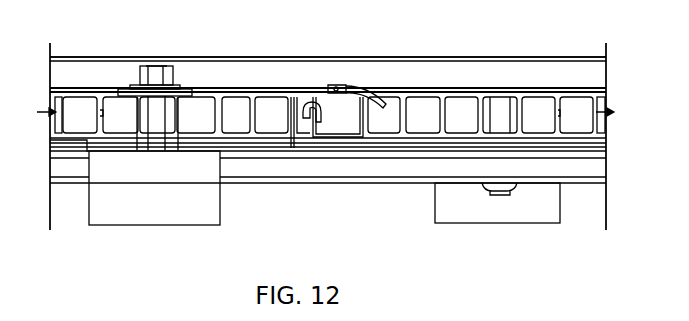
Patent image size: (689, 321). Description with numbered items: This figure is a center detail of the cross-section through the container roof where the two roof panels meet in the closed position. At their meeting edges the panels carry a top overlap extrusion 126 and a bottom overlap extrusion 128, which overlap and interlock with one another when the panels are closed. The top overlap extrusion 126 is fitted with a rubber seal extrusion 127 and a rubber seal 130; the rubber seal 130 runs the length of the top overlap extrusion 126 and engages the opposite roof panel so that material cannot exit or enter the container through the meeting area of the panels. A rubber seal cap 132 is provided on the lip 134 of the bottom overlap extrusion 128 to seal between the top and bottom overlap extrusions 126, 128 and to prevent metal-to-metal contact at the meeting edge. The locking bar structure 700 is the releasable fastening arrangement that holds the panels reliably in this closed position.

The structure for releasably fastening 700 is at (88, 212).
The top overlap extrusion 126 is at (233, 147).
The rubber seal extrusion 127 is at (310, 95).
The bottom overlap extrusion 128 is at (388, 140).
The rubber seal 130 is at (353, 87).
The rubber seal cap 132 is at (331, 100).
The lip 134 is at (308, 98).